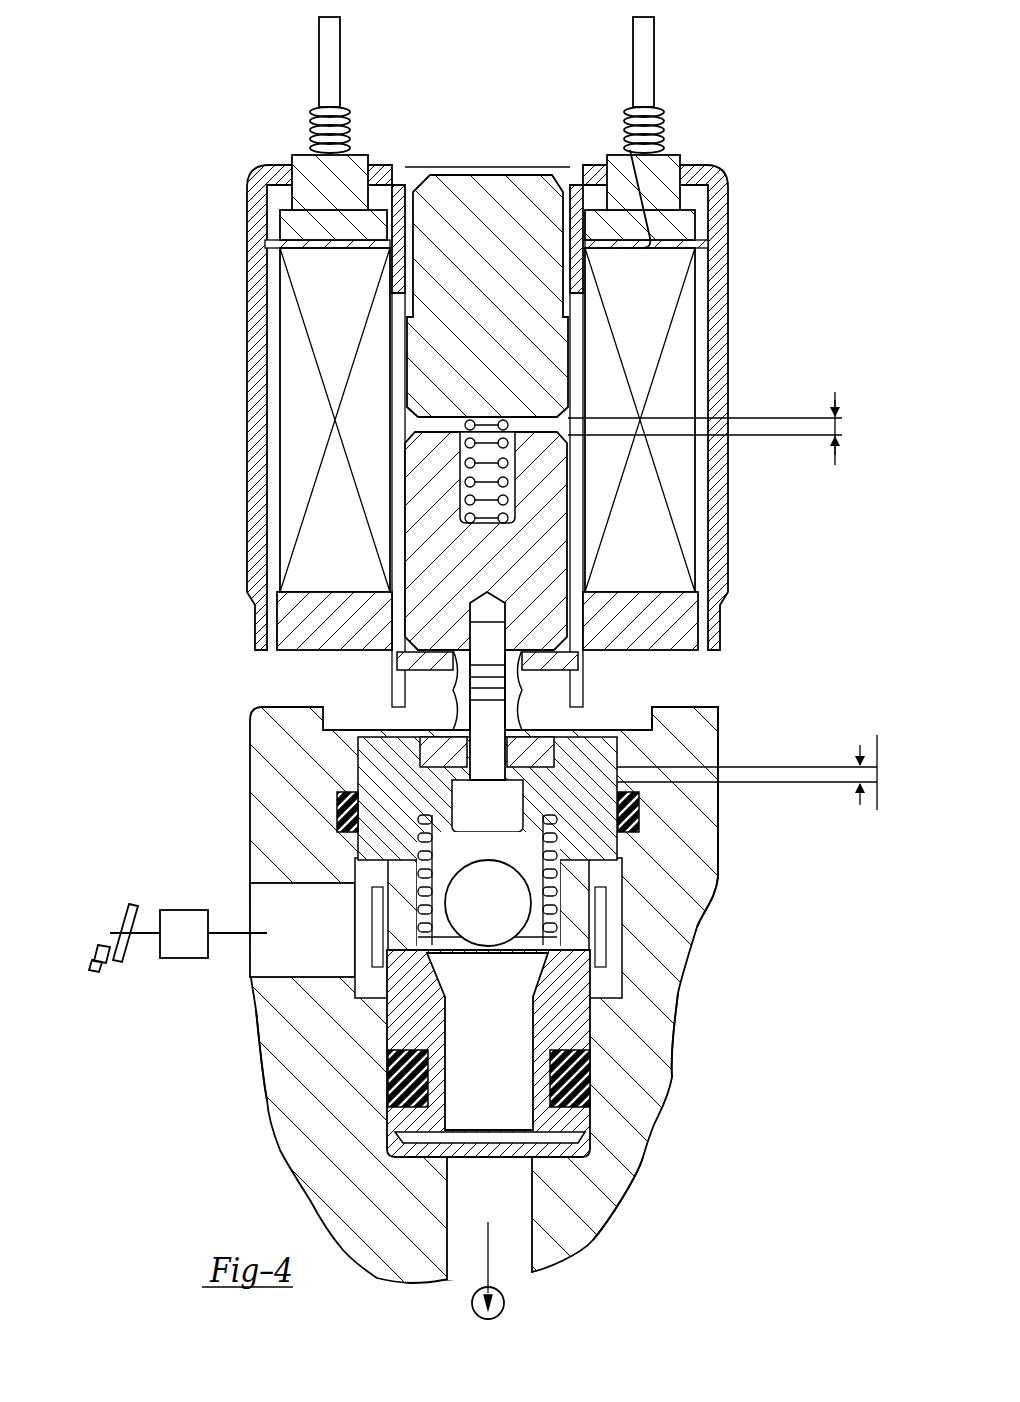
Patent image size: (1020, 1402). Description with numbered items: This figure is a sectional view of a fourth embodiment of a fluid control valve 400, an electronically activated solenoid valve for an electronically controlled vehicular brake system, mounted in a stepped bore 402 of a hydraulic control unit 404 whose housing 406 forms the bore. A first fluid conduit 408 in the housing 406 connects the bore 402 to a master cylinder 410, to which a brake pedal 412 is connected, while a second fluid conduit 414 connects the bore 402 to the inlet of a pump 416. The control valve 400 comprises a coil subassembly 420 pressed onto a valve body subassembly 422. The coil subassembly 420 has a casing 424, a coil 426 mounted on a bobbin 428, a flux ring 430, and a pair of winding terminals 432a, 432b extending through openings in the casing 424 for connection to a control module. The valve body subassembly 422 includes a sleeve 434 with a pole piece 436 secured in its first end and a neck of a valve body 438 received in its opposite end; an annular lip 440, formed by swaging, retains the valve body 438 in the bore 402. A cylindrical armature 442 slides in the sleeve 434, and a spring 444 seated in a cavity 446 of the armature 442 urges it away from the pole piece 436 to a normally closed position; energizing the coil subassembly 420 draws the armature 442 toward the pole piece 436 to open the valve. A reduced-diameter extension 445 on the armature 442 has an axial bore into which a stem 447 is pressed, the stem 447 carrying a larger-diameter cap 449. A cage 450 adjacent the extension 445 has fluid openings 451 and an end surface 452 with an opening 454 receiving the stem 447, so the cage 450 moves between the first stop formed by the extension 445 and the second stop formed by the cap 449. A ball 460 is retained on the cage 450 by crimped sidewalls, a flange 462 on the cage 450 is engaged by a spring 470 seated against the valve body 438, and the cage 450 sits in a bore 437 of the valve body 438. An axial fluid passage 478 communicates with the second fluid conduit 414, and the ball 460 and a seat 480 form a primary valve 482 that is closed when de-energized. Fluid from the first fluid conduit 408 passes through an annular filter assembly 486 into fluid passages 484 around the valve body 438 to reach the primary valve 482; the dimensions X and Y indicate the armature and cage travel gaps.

The control valve 400 is at (752, 388).
The stepped bore 402 is at (655, 906).
The hydraulic control unit 404 is at (686, 993).
The housing 406 is at (622, 1102).
The first fluid conduit 408 is at (362, 980).
The master cylinder 410 is at (162, 912).
The brake pedal 412 is at (98, 948).
The second fluid conduit 414 is at (525, 1262).
The pump 416 is at (478, 1316).
The coil subassembly 420 is at (735, 247).
The valve body subassembly 422 is at (600, 1022).
The casing 424 is at (250, 303).
The coil 426 is at (292, 398).
The bobbin 428 is at (293, 224).
The flux ring 430 is at (292, 632).
The winding terminal 432a is at (335, 42).
The winding terminal 432b is at (638, 70).
The sleeve 434 is at (573, 657).
The pole piece 436 is at (500, 182).
The bore 437 is at (428, 765).
The valve body 438 is at (660, 872).
The annular lip 440 is at (345, 740).
The armature 442 is at (558, 497).
The spring 444 is at (463, 463).
The reduced-diameter extension 445 is at (463, 702).
The cavity / axial bore 446 is at (510, 468).
The stem 447 is at (488, 715).
The cap 449 is at (505, 812).
The cage 450 is at (407, 780).
The fluid openings 451 is at (437, 785).
The end surface 452 is at (615, 745).
The opening 454 is at (640, 735).
The ball 460 is at (505, 916).
The flange 462 is at (545, 803).
The spring 470 is at (425, 897).
The axial fluid passage 478 is at (548, 1117).
The seat 480 is at (480, 948).
The primary valve 482 is at (498, 962).
The fluid passages 484 is at (620, 935).
The annular filter assembly 486 is at (358, 1000).
The core-armature gap dimension X is at (705, 414).
The pin stroke dimension Y is at (747, 758).